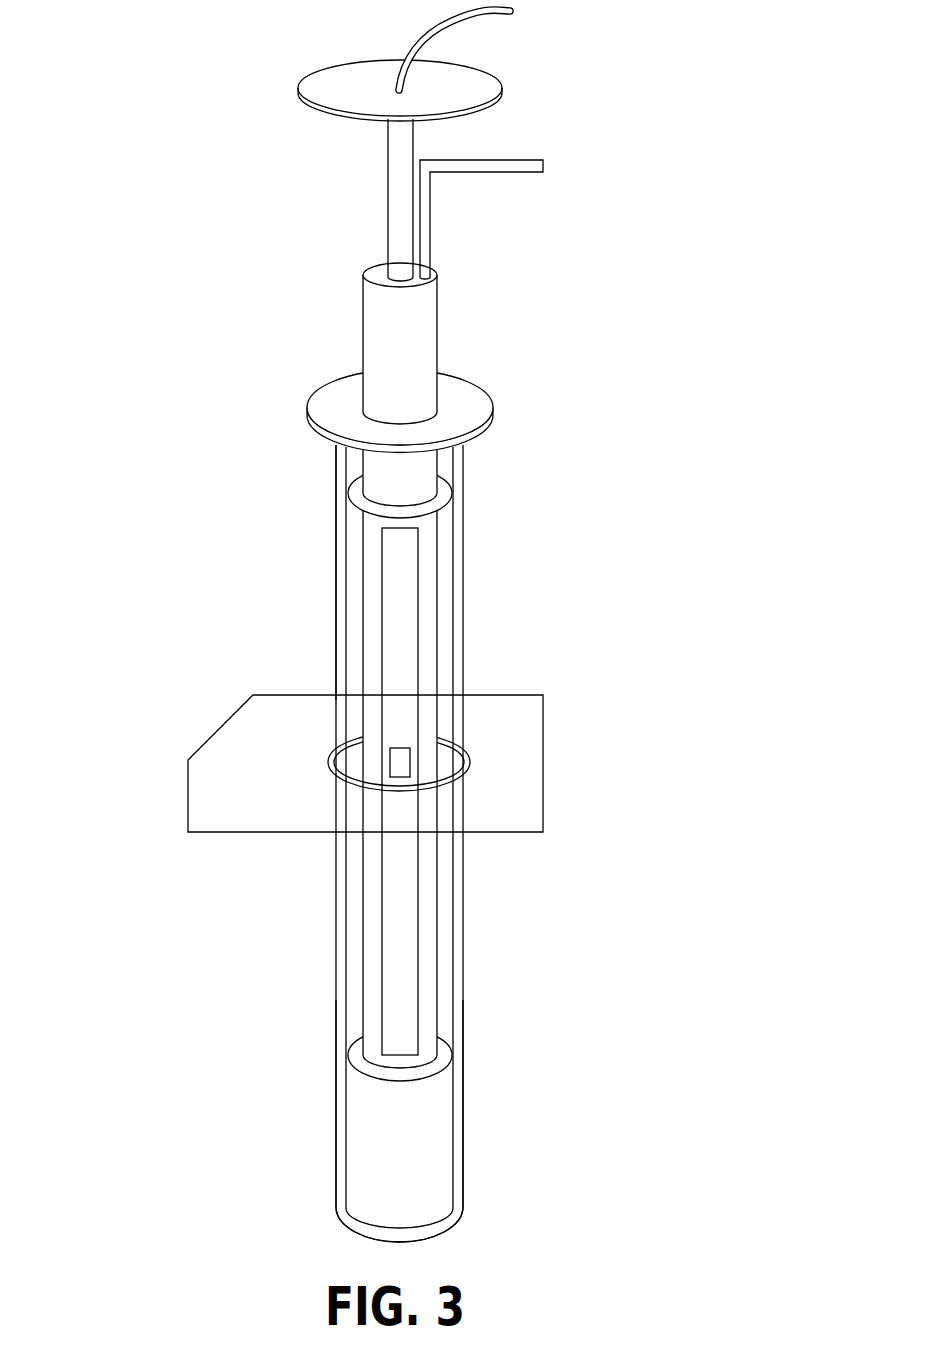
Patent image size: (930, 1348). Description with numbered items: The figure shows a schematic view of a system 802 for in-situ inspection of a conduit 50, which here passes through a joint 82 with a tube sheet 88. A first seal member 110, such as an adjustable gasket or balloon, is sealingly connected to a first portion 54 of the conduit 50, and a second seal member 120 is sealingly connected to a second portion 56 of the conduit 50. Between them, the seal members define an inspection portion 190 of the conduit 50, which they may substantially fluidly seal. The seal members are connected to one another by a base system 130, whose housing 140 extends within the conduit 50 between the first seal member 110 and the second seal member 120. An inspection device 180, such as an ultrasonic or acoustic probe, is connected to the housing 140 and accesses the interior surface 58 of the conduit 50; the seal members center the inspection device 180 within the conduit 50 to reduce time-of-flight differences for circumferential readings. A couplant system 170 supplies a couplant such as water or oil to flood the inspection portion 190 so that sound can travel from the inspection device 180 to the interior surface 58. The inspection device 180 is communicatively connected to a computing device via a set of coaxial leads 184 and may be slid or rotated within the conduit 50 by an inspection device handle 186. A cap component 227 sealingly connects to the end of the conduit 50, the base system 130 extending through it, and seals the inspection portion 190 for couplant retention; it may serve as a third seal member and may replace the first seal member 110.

The system 802 is at (158, 228).
The set of coaxial leads 184 is at (518, 19).
The inspection device handle 186 is at (513, 92).
The couplant system 170 is at (505, 178).
The base system 130 is at (360, 587).
The cap component 227 is at (492, 405).
The first portion 54 is at (327, 480).
The first seal member 110 is at (447, 489).
The housing 140 is at (408, 672).
The joint 82 is at (327, 757).
The tube sheet 88 is at (262, 832).
The inspection device 180 is at (412, 766).
The inspection portion 190 is at (440, 685).
The interior surface 58 is at (457, 852).
The conduit 50 is at (338, 958).
The second portion 56 is at (328, 1067).
The second seal member 120 is at (447, 1049).